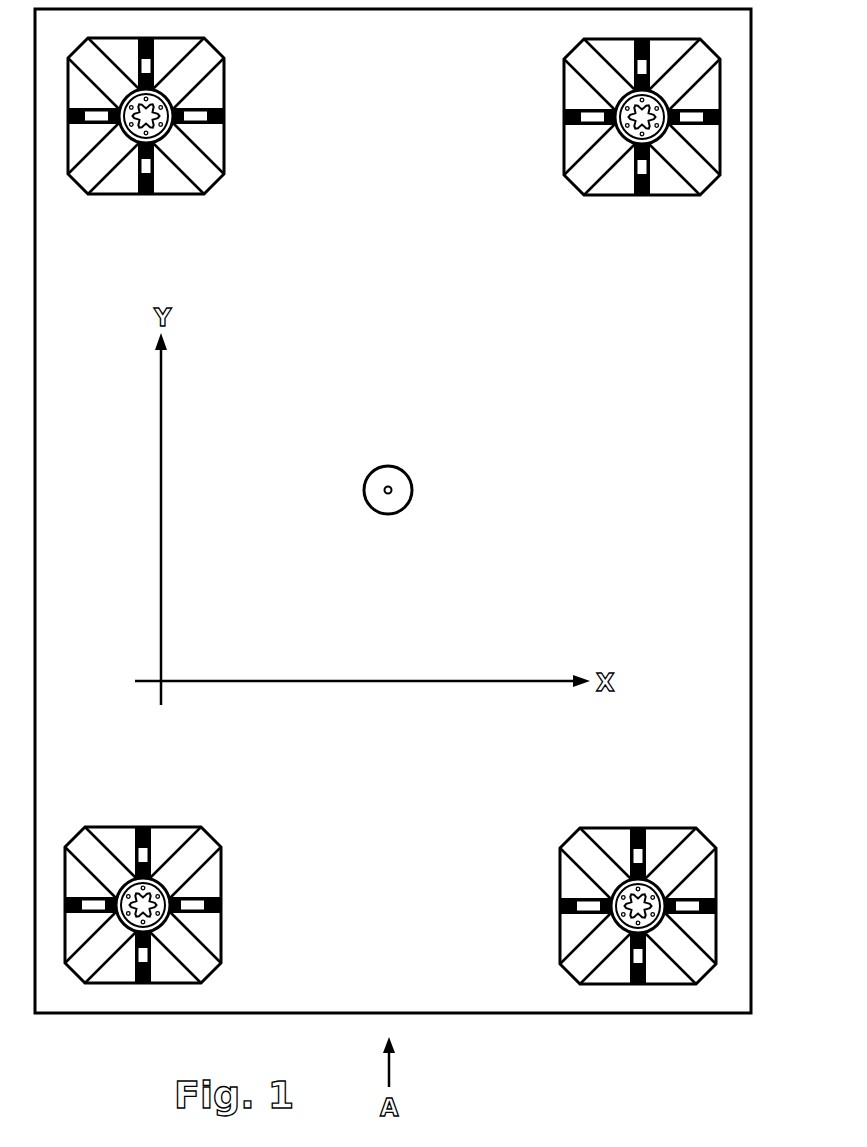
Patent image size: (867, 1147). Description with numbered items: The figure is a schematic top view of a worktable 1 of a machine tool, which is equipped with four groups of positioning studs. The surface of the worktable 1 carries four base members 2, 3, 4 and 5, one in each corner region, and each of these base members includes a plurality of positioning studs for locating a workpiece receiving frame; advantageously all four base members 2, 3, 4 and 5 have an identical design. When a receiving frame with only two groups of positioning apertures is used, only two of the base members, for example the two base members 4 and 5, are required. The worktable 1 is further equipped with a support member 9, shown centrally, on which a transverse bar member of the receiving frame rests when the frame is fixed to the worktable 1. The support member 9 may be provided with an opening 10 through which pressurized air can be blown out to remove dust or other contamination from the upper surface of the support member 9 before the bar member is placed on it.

The worktable 1 is at (720, 523).
The base member 2 is at (212, 97).
The base member 3 is at (574, 86).
The base member 4 is at (204, 883).
The base member 5 is at (569, 872).
The support member 9 is at (400, 483).
The opening 10 is at (384, 490).